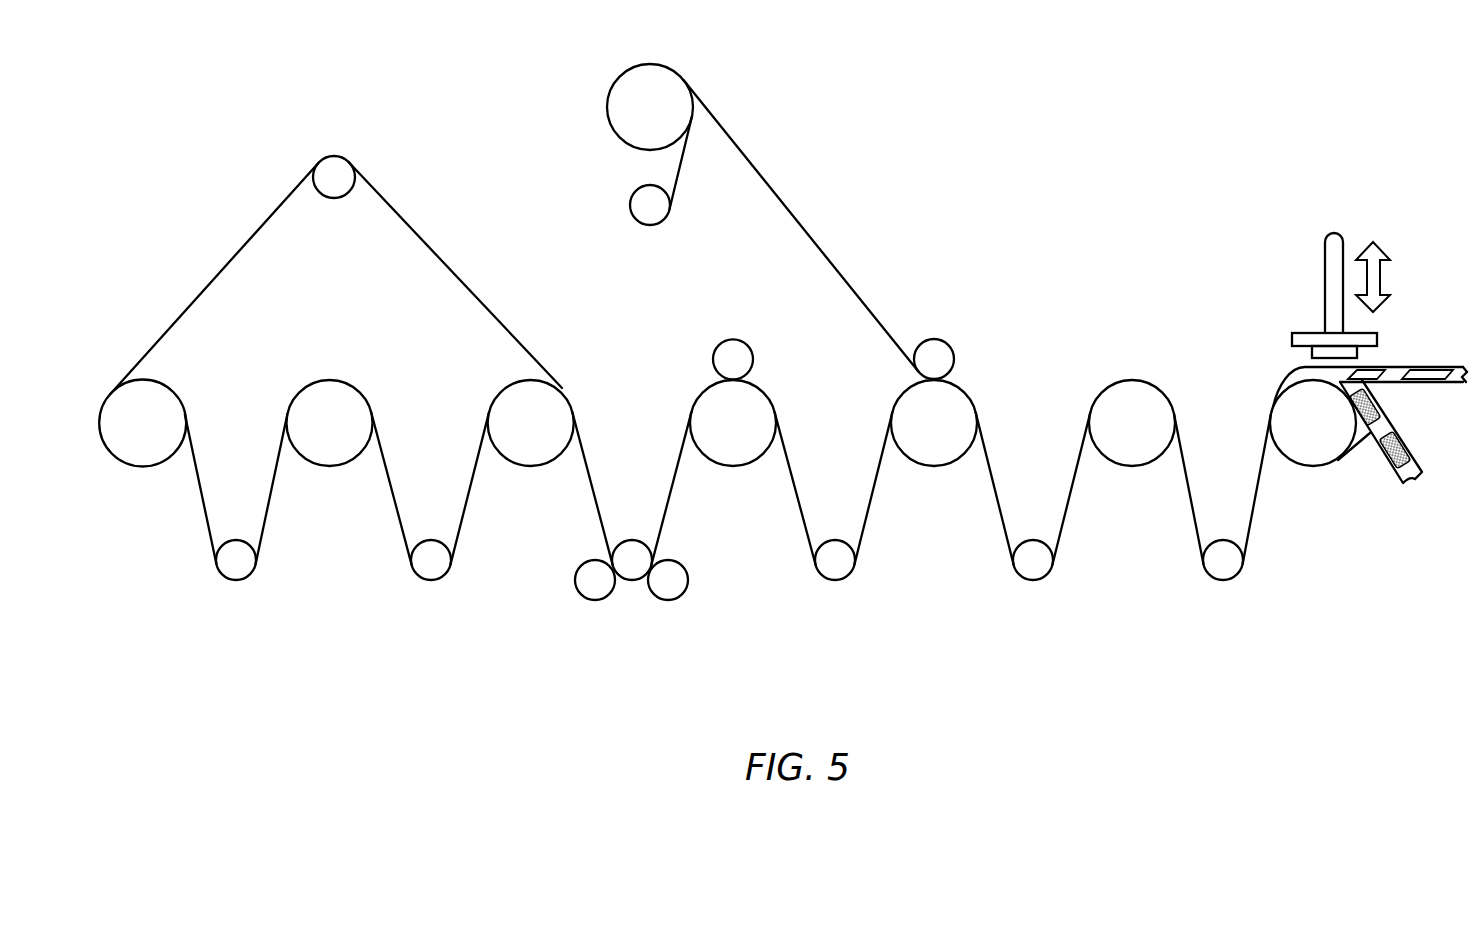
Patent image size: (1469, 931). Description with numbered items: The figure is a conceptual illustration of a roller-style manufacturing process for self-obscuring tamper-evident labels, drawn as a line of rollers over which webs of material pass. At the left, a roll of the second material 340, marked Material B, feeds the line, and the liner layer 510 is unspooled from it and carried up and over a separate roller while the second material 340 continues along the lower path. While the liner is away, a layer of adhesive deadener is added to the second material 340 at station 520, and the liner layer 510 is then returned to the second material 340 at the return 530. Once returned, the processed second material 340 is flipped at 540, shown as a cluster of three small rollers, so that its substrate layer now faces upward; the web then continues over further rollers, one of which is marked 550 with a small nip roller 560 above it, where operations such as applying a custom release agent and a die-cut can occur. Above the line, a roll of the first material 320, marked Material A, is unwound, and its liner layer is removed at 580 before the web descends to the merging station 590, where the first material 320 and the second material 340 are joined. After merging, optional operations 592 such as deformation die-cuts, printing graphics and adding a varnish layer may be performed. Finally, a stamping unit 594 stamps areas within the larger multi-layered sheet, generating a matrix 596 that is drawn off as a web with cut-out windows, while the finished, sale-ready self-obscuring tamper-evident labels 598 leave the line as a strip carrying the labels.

The first material 320 is at (610, 93).
The second material 340 is at (140, 466).
The liner layer 510 is at (221, 267).
The adhesive deadener application 520 is at (330, 379).
The liner return 530 is at (568, 384).
The flipping 540 is at (632, 582).
The roller 550 is at (733, 467).
The nip roller 560 is at (753, 359).
The liner layer removal 580 is at (680, 170).
The merging 590 is at (910, 350).
The optional operations 592 is at (1125, 380).
The stamping 594 is at (1325, 308).
The matrix 596 is at (1433, 367).
The self-obscuring tamper-evident labels 598 is at (1383, 463).